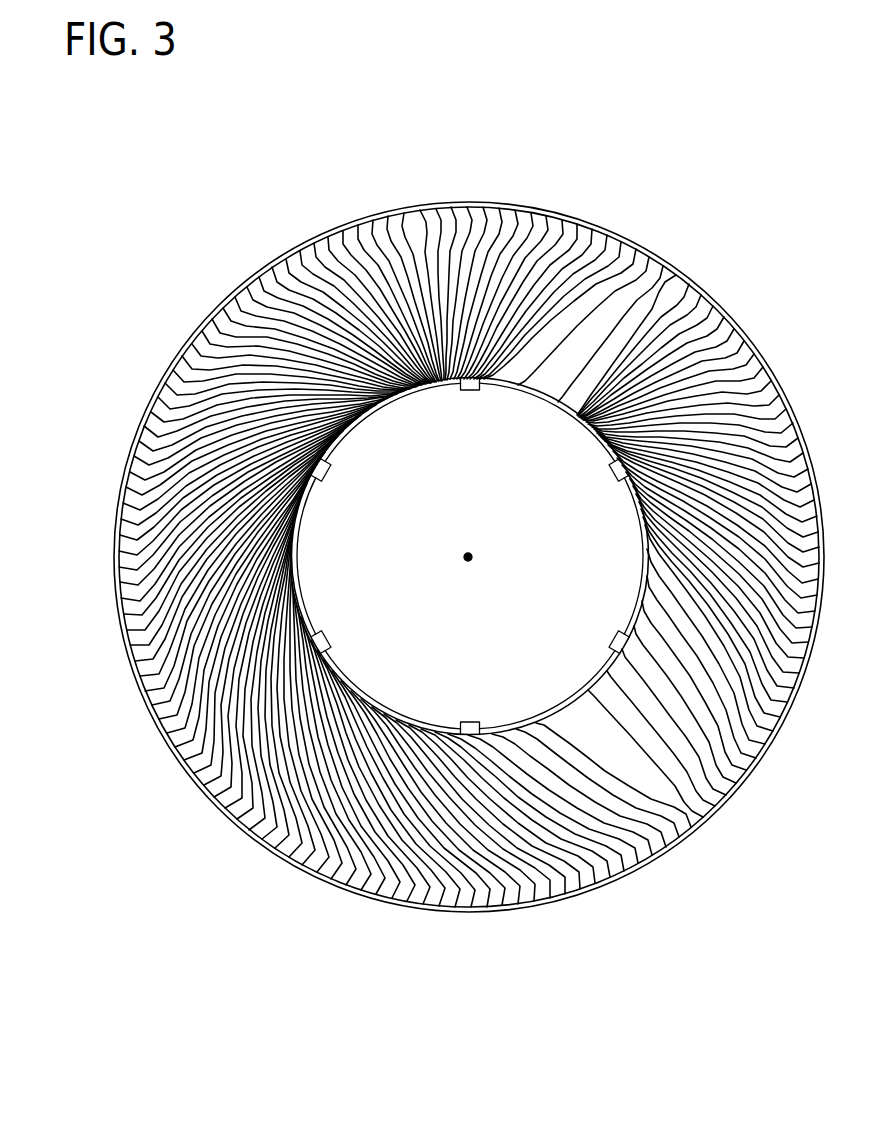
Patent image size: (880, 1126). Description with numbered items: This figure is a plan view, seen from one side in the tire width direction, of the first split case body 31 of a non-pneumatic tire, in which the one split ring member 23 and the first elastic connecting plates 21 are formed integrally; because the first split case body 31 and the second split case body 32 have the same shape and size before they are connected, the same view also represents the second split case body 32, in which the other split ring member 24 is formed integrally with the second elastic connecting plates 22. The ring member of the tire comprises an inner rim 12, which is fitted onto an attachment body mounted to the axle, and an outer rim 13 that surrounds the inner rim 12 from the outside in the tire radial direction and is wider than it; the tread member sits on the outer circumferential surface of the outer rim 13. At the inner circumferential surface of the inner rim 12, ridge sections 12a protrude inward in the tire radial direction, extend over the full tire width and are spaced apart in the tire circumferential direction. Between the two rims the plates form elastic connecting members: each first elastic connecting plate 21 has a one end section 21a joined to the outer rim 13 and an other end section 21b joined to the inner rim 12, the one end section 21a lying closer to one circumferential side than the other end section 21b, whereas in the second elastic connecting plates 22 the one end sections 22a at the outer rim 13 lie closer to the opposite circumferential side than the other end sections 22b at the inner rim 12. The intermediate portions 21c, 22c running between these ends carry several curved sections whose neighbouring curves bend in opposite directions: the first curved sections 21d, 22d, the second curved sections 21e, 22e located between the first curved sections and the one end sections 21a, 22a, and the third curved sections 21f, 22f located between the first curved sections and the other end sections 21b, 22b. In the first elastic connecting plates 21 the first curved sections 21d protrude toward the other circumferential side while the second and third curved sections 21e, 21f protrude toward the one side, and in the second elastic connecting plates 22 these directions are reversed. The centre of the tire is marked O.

The first split case body 31 is at (426, 518).
The second split case body 32 is at (728, 92).
The first elastic connecting plates 21 is at (518, 280).
The second elastic connecting plates 22 is at (423, 554).
The one split ring member 23 is at (469, 499).
The other split ring member 24 is at (728, 138).
The outer rim 13 is at (622, 243).
The inner rim 12 is at (565, 402).
The ridge sections 12a is at (320, 641).
The one end sections 21a is at (432, 208).
The one end sections 22a is at (468, 295).
The other end sections 21b is at (517, 378).
The other end sections 22b is at (668, 404).
The intermediate portions 21c is at (310, 310).
The intermediate portions 22c is at (274, 407).
The first curved sections 21d is at (317, 797).
The first curved sections 22d is at (457, 720).
The second curved sections 21e is at (357, 870).
The second curved sections 22e is at (643, 650).
The third curved sections 21f is at (303, 712).
The third curved sections 22f is at (243, 633).
The rotation center axis O is at (472, 554).